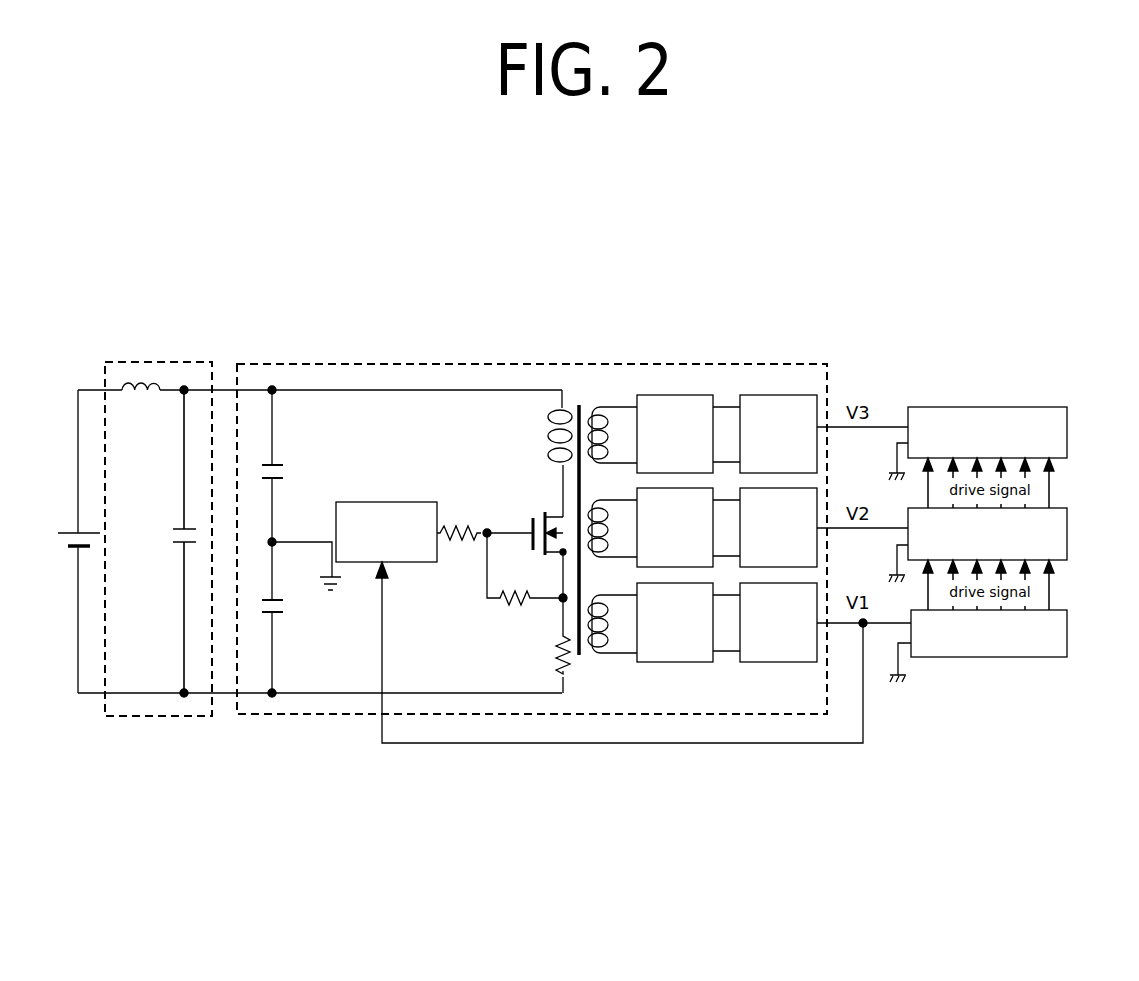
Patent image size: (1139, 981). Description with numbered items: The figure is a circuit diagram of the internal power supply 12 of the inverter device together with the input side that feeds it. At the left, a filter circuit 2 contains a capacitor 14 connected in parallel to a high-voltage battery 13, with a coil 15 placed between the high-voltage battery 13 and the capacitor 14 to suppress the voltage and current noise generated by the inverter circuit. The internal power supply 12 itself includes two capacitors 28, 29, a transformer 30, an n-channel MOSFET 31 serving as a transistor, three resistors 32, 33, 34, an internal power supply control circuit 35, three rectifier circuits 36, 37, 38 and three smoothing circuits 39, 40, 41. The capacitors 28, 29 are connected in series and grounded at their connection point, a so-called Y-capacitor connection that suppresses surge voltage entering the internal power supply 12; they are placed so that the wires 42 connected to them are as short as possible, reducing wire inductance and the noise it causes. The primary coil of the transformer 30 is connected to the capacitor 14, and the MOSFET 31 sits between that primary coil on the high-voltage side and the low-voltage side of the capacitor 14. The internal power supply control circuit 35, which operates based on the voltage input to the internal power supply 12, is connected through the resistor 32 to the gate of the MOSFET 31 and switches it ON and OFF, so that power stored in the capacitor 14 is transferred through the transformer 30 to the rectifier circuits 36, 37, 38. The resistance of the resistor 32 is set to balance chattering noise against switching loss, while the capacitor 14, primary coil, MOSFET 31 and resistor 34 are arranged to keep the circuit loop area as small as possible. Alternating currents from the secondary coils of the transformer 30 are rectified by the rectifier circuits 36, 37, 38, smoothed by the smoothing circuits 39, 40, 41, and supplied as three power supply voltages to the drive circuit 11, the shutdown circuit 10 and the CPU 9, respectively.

The filter circuit 2 is at (158, 361).
The CPU 9 is at (1067, 636).
The shutdown circuit 10 is at (1067, 534).
The drive circuit 11 is at (1067, 434).
The internal power supply 12 is at (530, 363).
The high-voltage battery 13 is at (65, 532).
The capacitor 14 is at (177, 525).
The coil 15 is at (141, 399).
The capacitor 28 is at (285, 475).
The capacitor 29 is at (288, 611).
The transformer 30 is at (583, 392).
The n-channel MOSFET 31 is at (552, 517).
The resistor 32 is at (460, 522).
The resistor 33 is at (513, 606).
The resistor 34 is at (561, 661).
The internal power supply control circuit 35 is at (388, 500).
The rectifier circuit 36 is at (675, 434).
The rectifier circuit 37 is at (675, 527).
The rectifier circuit 38 is at (675, 622).
The smoothing circuit 39 is at (778, 434).
The smoothing circuit 40 is at (778, 527).
The smoothing circuit 41 is at (778, 622).
The wires 42 is at (275, 436).